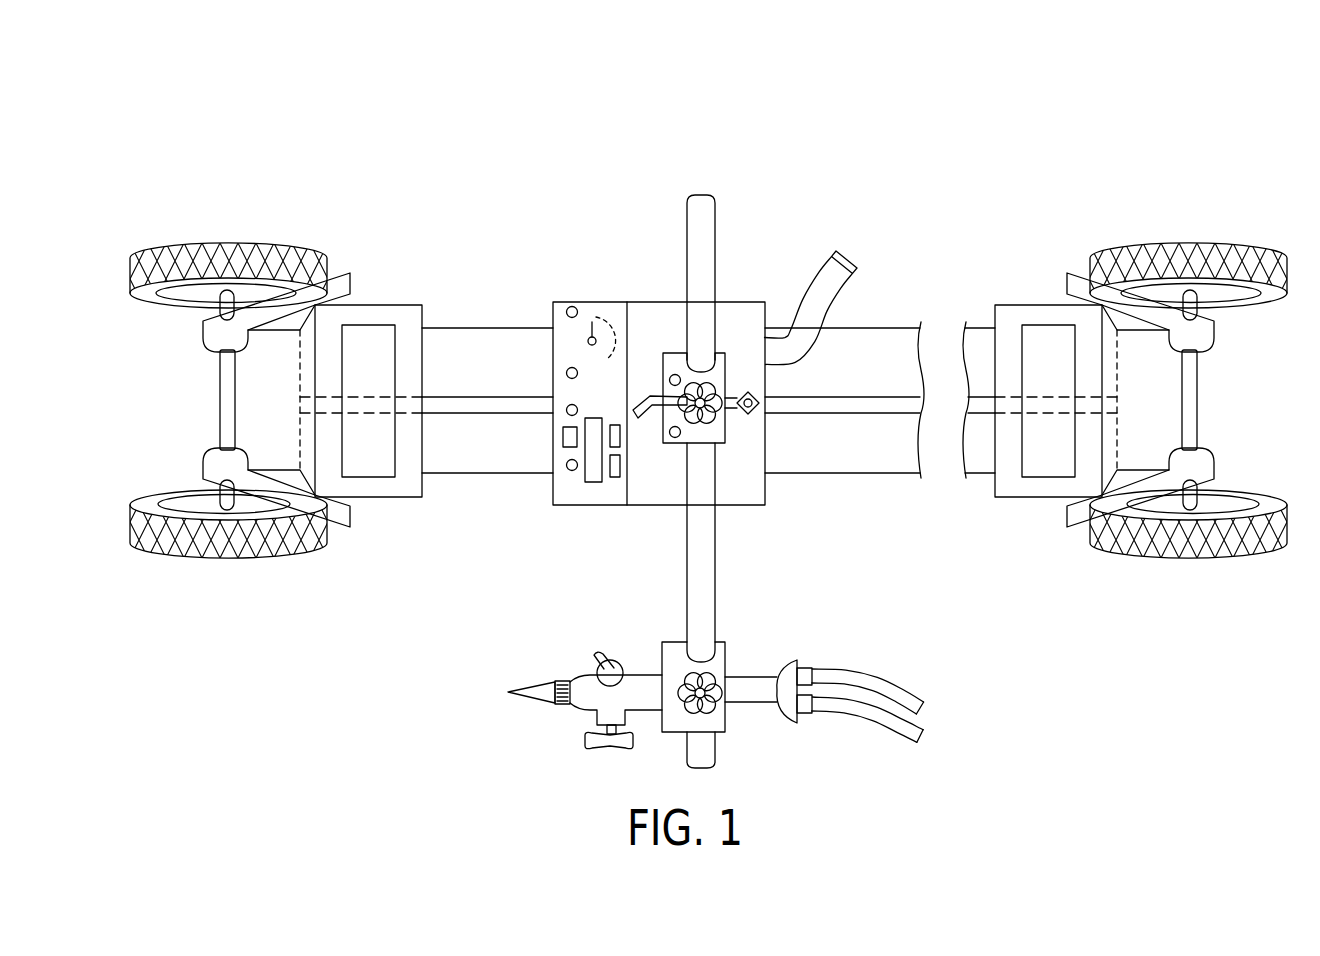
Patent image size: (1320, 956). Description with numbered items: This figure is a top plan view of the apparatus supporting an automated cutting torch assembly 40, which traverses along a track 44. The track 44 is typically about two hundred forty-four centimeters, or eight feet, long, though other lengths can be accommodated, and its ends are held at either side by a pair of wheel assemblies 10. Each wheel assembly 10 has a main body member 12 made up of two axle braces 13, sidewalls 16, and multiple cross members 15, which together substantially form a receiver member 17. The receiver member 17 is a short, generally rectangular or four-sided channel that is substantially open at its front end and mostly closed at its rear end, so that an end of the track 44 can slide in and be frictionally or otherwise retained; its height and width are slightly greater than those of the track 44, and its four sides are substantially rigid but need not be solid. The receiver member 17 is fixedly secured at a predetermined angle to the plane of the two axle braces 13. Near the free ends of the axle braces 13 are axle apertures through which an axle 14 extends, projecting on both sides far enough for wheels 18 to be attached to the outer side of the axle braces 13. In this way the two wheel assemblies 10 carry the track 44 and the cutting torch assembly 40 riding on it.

The wheel assembly 10 is at (170, 185).
The main body member 12 is at (360, 540).
The axle brace 13 is at (1082, 518).
The axle 14 is at (220, 372).
The cross member 15 is at (300, 428).
The sidewall 16 is at (393, 318).
The receiver member 17 is at (448, 509).
The wheel 18 is at (198, 558).
The automated cutting torch assembly 40 is at (758, 186).
The track 44 is at (878, 347).